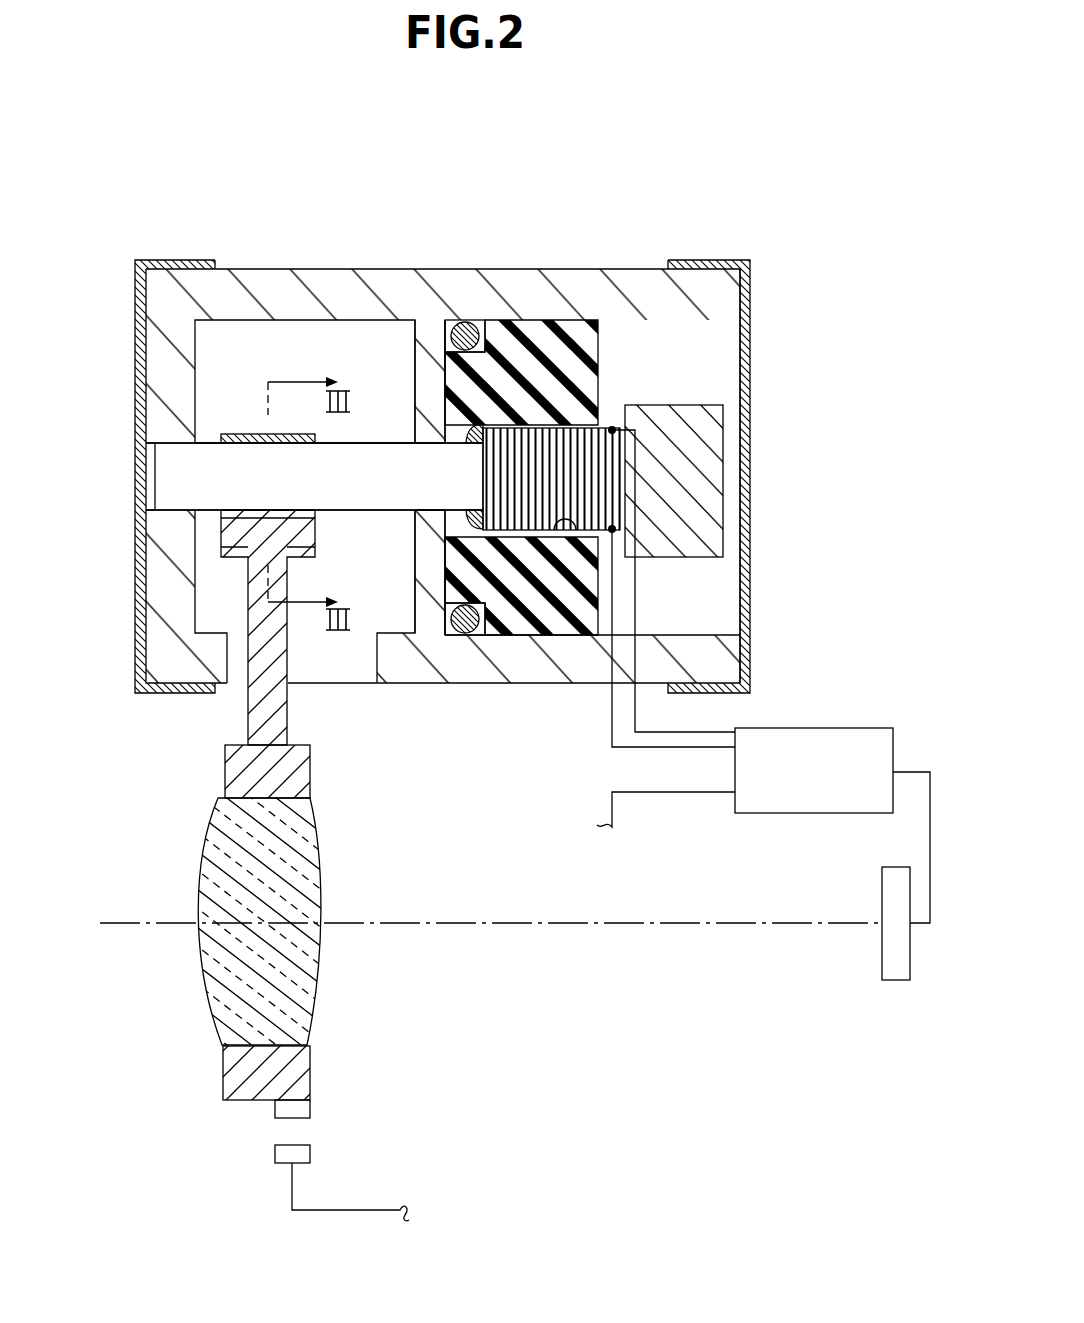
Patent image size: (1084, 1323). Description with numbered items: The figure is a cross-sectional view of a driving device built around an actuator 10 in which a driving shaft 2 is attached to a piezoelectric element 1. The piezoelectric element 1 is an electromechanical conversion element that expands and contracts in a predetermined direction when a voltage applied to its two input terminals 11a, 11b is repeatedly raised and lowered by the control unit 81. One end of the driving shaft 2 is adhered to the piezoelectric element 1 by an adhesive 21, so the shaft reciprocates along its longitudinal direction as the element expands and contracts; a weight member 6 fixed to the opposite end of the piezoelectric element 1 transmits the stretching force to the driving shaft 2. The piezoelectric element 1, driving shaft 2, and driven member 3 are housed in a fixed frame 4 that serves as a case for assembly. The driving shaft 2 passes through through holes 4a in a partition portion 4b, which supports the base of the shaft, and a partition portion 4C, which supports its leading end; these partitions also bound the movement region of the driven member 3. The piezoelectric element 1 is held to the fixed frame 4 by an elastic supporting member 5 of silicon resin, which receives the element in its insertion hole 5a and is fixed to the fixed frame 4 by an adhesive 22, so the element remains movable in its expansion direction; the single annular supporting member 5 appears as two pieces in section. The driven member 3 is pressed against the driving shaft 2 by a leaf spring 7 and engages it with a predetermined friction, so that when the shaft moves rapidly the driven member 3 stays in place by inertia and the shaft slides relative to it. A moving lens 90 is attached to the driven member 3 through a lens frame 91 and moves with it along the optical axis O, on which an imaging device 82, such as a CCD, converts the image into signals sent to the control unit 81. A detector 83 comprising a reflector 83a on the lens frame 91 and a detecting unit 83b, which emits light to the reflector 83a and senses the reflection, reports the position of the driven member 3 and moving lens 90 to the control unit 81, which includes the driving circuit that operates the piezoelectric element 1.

The piezoelectric element 1 is at (594, 417).
The driving shaft 2 is at (390, 460).
The driven member 3 is at (205, 525).
The fixed frame 4 is at (528, 262).
The through hole 4a is at (172, 446).
The partition portion 4b is at (415, 347).
The partition portion 4C is at (150, 341).
The supporting member 5 is at (572, 308).
The insertion hole 5a is at (576, 532).
The weight member 6 is at (713, 558).
The leaf spring 7 is at (233, 432).
The actuator 10 is at (363, 442).
The input terminal 11a is at (614, 428).
The input terminal 11b is at (613, 533).
The adhesive 21 is at (468, 426).
The adhesive 22 is at (465, 323).
The control unit 81 is at (818, 728).
The imaging device 82 is at (898, 982).
The detector 83 is at (413, 1098).
The reflector 83a is at (312, 1108).
The detecting unit 83b is at (312, 1154).
The moving lens 90 is at (210, 823).
The lens frame 91 is at (225, 775).
The optical axis O is at (478, 923).